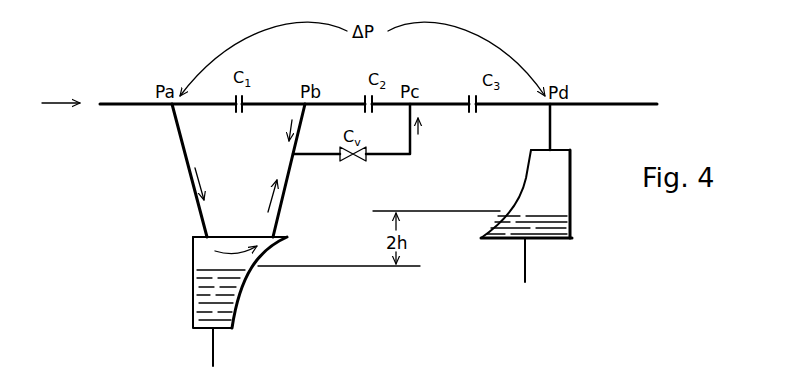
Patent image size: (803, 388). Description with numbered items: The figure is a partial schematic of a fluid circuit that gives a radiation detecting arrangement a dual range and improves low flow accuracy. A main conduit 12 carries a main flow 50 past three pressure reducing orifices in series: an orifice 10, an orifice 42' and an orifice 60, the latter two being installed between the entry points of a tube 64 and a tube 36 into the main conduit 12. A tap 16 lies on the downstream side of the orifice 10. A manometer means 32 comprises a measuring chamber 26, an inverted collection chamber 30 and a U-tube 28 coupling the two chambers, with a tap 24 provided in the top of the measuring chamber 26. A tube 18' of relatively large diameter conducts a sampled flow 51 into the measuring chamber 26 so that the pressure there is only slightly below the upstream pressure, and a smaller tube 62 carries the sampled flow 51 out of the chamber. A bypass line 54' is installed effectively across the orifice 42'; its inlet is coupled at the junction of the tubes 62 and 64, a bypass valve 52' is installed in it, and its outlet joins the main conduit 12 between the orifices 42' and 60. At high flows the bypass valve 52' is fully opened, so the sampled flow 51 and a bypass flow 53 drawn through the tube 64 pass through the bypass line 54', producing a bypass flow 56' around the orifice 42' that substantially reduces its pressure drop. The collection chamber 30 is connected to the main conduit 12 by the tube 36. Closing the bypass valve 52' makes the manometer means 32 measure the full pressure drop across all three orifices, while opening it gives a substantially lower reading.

The main conduit 12 is at (108, 103).
The main flow 50 is at (56, 100).
The orifice 10 is at (243, 97).
The orifice 42' is at (354, 93).
The orifice 60 is at (468, 96).
The tube 18' is at (173, 170).
The tap 16 is at (306, 108).
The bypass flow 53 is at (291, 127).
The sampled flow 51 is at (274, 200).
The tube 64 is at (297, 139).
The bypass valve 52' is at (356, 167).
The bypass line 54' is at (394, 136).
The bypass flow 56' is at (451, 136).
The tube 62 is at (283, 204).
The tap 24 is at (276, 237).
The measuring chamber 26 is at (193, 242).
The tube 36 is at (552, 131).
The collection chamber 30 is at (572, 182).
The manometer means 32 is at (537, 240).
The U-tube 28 is at (523, 272).